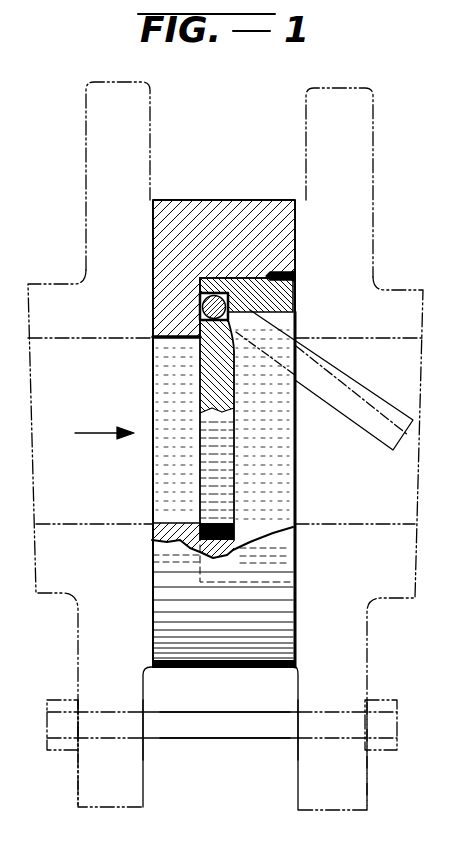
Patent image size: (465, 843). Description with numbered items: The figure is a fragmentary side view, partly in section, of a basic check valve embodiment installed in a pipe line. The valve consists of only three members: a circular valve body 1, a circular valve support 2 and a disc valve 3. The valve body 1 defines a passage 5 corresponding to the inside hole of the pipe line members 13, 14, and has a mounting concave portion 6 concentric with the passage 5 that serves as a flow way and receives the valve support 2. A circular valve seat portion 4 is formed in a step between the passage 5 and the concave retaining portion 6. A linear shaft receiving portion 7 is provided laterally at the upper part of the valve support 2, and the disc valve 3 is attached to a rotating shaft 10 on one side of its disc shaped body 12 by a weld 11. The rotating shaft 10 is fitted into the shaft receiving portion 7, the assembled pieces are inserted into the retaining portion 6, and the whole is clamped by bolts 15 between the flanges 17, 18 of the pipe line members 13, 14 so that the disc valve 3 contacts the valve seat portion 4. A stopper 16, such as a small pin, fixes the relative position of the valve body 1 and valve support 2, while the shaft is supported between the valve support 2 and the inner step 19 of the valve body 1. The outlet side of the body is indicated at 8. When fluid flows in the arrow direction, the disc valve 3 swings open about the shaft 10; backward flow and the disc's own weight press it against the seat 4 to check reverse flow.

The valve body 1 is at (228, 206).
The valve support 2 is at (283, 300).
The disc valve 3 is at (343, 373).
The valve seat portion 4 is at (197, 529).
The passage 5 is at (160, 465).
The mounting concave portion 6 is at (268, 276).
The shaft receiving portion 7 is at (225, 278).
The outlet bore 8 is at (296, 449).
The rotating shaft 10 is at (200, 307).
The weld 11 is at (155, 340).
The disc shaped body 12 is at (230, 398).
The pipe line member 13 is at (78, 598).
The pipe line member 14 is at (368, 632).
The bolt 15 is at (217, 740).
The stopper 16 is at (297, 280).
The flange 17 is at (143, 748).
The flange 18 is at (365, 770).
The inner step 19 is at (200, 291).